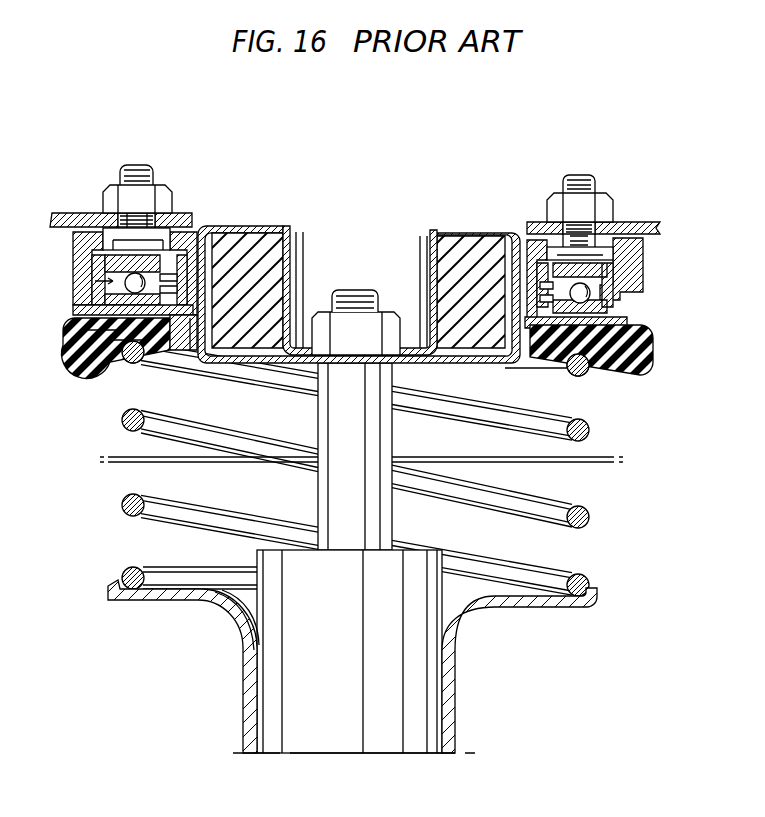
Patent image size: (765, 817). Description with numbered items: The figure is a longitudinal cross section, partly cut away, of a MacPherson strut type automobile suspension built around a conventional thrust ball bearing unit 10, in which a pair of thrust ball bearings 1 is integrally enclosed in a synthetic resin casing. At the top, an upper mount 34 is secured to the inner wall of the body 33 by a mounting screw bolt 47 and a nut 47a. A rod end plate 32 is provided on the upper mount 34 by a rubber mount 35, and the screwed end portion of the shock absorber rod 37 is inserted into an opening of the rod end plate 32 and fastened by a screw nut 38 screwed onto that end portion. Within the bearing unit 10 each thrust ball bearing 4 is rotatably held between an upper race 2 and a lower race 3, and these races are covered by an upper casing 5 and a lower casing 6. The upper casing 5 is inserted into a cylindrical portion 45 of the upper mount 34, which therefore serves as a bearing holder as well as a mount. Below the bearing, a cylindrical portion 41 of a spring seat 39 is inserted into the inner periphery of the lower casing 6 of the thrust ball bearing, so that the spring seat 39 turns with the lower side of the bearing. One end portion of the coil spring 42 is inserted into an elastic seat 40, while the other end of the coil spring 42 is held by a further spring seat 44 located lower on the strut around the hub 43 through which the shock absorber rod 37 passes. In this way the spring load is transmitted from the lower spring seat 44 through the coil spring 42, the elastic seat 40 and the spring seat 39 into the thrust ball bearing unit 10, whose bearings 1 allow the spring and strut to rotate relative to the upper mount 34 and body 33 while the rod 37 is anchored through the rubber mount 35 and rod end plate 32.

The thrust ball bearing 1 is at (85, 286).
The upper race 2 is at (192, 226).
The lower race 3 is at (120, 326).
The thrust ball bearing 4 is at (100, 330).
The upper casing 5 is at (80, 240).
The lower casing 6 is at (80, 305).
The thrust ball bearing unit 10 is at (642, 312).
The rod end plate 32 is at (298, 290).
The body 33 is at (83, 215).
The upper mount 34 is at (212, 230).
The rubber mount 35 is at (286, 292).
The shock absorber rod 37 is at (318, 488).
The screw nut 38 is at (398, 317).
The spring seat 39 is at (180, 322).
The elastic seat 40 is at (77, 347).
The cylindrical portion 41 is at (191, 324).
The coil spring 42 is at (122, 505).
The cylinder hub 43 is at (257, 560).
The spring seat 44 is at (178, 600).
The cylindrical portion 45 is at (85, 263).
The mounting screw bolt 47 is at (138, 165).
The nut 47a is at (168, 185).